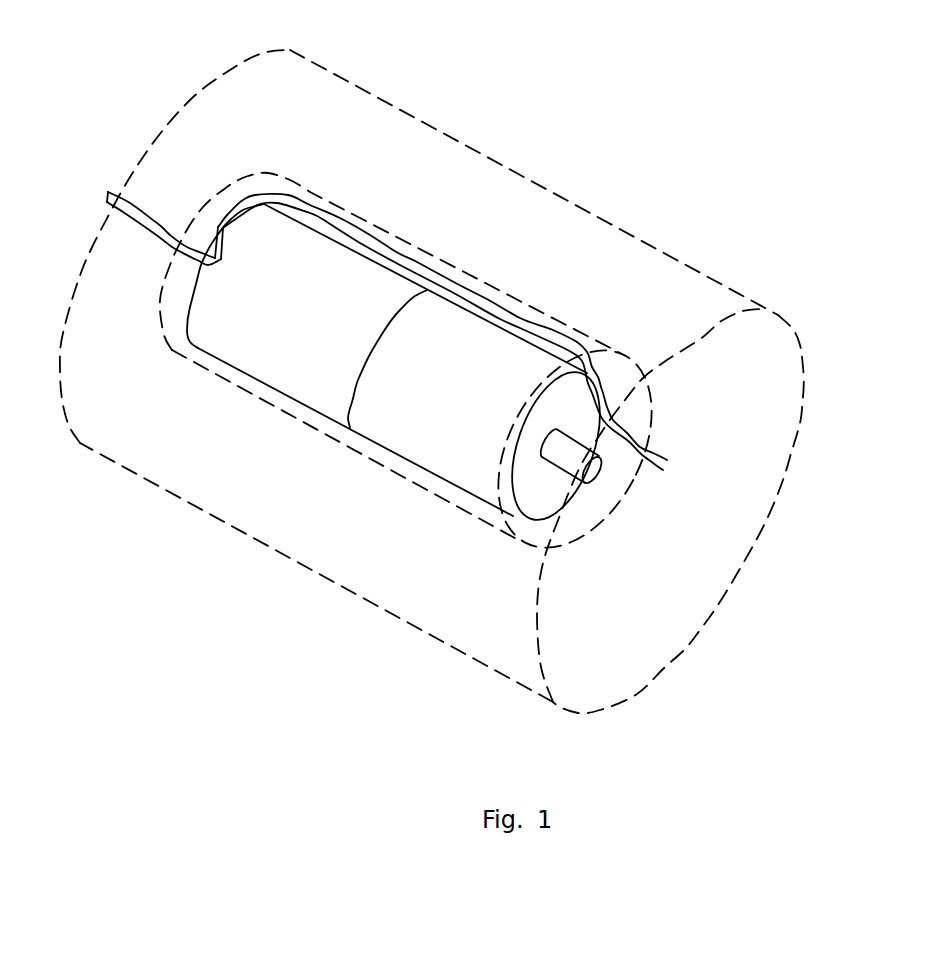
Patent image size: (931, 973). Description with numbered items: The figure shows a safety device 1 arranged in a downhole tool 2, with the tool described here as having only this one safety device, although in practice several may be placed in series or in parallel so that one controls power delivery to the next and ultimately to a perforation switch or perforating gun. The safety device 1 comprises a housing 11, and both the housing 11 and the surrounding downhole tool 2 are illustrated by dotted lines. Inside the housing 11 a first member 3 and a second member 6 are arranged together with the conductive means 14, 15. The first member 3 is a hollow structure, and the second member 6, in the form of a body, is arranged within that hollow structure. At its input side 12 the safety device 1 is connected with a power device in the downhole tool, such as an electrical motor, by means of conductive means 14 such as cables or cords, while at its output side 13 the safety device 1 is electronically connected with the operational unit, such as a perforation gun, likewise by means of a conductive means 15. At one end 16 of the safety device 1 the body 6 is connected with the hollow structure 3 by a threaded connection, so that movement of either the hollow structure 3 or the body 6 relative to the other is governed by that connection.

The safety device 1 is at (647, 85).
The downhole tool 2 is at (616, 229).
The first member 3 is at (330, 394).
The second member 6 is at (585, 477).
The housing 11 is at (410, 481).
The input side 12 is at (126, 211).
The output side 13 is at (581, 355).
The conductive means 14 is at (118, 213).
The conductive means 15 is at (607, 368).
The end 16 is at (533, 488).